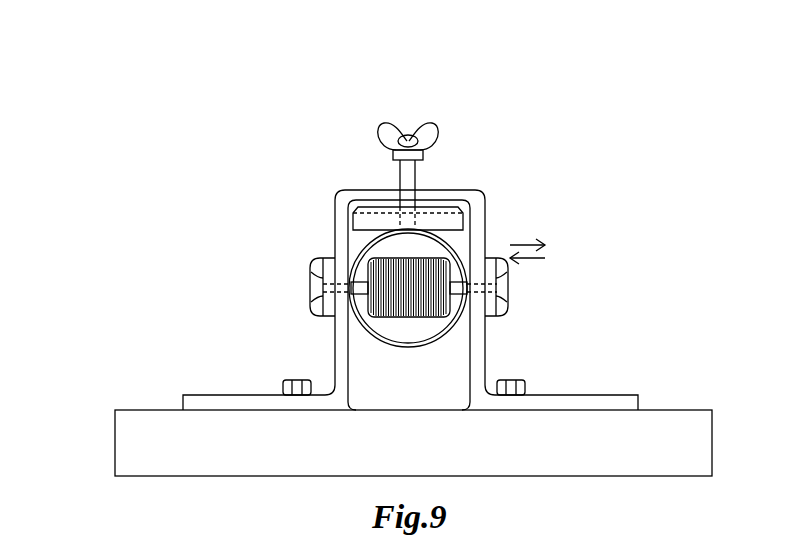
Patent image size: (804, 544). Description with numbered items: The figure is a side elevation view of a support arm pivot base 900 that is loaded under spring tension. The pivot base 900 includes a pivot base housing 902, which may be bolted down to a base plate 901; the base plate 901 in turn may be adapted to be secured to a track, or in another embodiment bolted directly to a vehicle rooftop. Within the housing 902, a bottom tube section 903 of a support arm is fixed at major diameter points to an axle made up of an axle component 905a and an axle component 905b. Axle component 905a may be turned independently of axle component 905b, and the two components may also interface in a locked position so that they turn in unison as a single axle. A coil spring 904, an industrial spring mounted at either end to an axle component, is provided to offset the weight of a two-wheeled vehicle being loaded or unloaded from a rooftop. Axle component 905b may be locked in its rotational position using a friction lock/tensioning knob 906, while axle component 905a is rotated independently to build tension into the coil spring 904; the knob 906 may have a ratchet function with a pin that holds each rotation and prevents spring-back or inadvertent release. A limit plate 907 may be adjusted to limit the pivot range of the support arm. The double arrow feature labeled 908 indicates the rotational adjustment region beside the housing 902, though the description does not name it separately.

The support arm pivot base 900 is at (511, 94).
The base plate 901 is at (163, 410).
The pivot base housing 902 is at (452, 190).
The bottom tube section 903 is at (357, 267).
The coil spring 904 is at (375, 318).
The axle component 905a is at (462, 314).
The axle component 905b is at (362, 290).
The friction lock/tensioning knob 906 is at (508, 295).
The limit plate 907 is at (383, 217).
The slot 908 is at (479, 262).